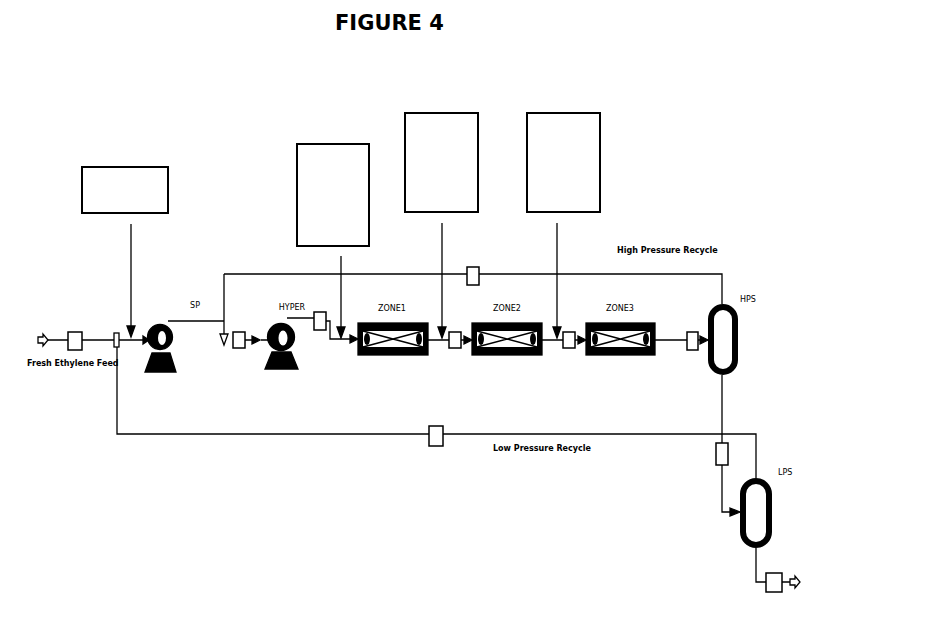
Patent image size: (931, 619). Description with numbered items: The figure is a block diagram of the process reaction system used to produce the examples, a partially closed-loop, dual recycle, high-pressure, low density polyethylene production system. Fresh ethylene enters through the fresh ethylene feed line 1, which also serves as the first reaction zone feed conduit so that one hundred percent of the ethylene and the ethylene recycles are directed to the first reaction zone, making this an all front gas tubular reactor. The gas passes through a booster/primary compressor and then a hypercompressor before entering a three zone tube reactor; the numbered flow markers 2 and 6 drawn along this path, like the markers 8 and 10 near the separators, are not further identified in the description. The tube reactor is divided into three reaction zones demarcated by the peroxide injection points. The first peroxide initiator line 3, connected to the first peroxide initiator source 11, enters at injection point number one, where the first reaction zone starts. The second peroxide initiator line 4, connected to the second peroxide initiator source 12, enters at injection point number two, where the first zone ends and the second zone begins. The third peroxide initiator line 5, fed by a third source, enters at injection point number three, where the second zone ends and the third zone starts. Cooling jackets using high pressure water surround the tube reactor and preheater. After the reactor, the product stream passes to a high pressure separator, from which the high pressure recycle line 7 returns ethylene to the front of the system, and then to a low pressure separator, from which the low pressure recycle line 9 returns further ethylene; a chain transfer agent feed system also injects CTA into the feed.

The fresh ethylene feed line 1 is at (75, 341).
The primary compressor discharge stream 2 is at (239, 340).
The first peroxide initiator line 3 is at (320, 321).
The second peroxide initiator line 4 is at (455, 340).
The third peroxide initiator line 5 is at (569, 340).
The zone 3 outlet stream 6 is at (692, 341).
The high pressure recycle line 7 is at (473, 276).
The HPS bottoms stream 8 is at (722, 454).
The low pressure recycle line 9 is at (436, 436).
The LPS product stream 10 is at (774, 582).
The first peroxide initiator source 11 is at (333, 241).
The second peroxide initiator source 12 is at (441, 225).